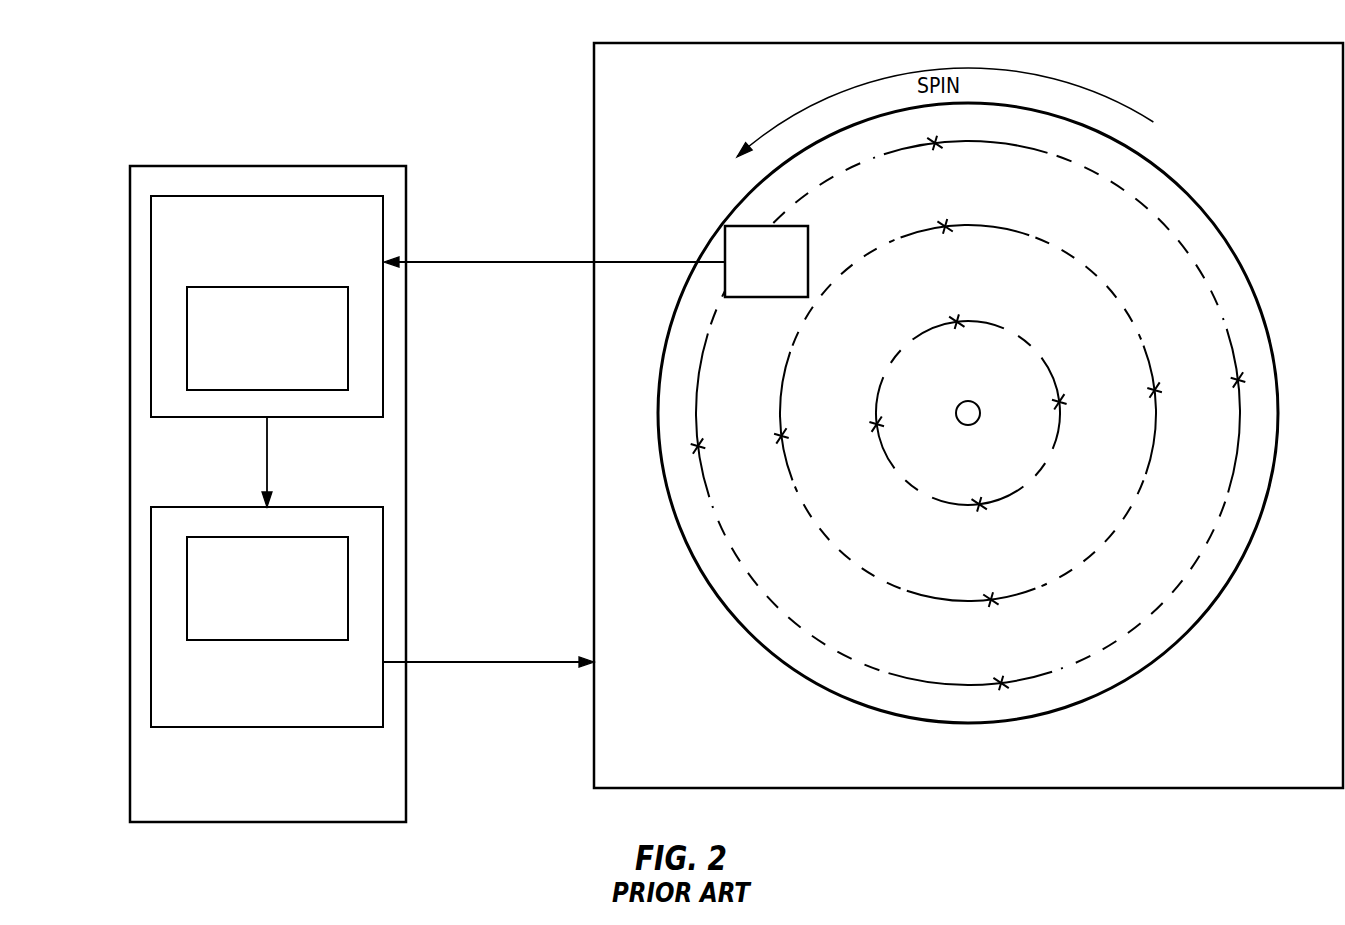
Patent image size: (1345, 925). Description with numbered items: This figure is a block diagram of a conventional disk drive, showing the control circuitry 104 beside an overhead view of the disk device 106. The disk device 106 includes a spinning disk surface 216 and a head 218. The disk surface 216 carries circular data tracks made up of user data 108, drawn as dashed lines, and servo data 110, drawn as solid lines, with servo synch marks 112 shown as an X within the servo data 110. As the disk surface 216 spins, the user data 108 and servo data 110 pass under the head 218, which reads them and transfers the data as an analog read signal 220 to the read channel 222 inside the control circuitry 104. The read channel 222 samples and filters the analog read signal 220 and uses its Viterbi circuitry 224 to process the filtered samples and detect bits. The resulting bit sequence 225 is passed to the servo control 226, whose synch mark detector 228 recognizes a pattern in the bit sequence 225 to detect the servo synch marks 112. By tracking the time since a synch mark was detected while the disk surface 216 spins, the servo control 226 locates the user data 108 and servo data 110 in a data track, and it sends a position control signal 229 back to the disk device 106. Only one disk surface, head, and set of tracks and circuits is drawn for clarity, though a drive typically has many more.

The control circuitry 104 is at (248, 810).
The disk device 106 is at (786, 773).
The user data 108 is at (1163, 234).
The servo data 110 is at (995, 150).
The servo synch marks 112 is at (931, 152).
The disk surface 216 is at (1157, 660).
The head 218 is at (787, 288).
The analog read signal 220 is at (500, 263).
The read channel 222 is at (248, 265).
The Viterbi circuitry 224 is at (248, 378).
The bit sequence 225 is at (267, 462).
The servo control 226 is at (248, 713).
The synch mark detector 228 is at (248, 628).
The position control signal 229 is at (502, 663).